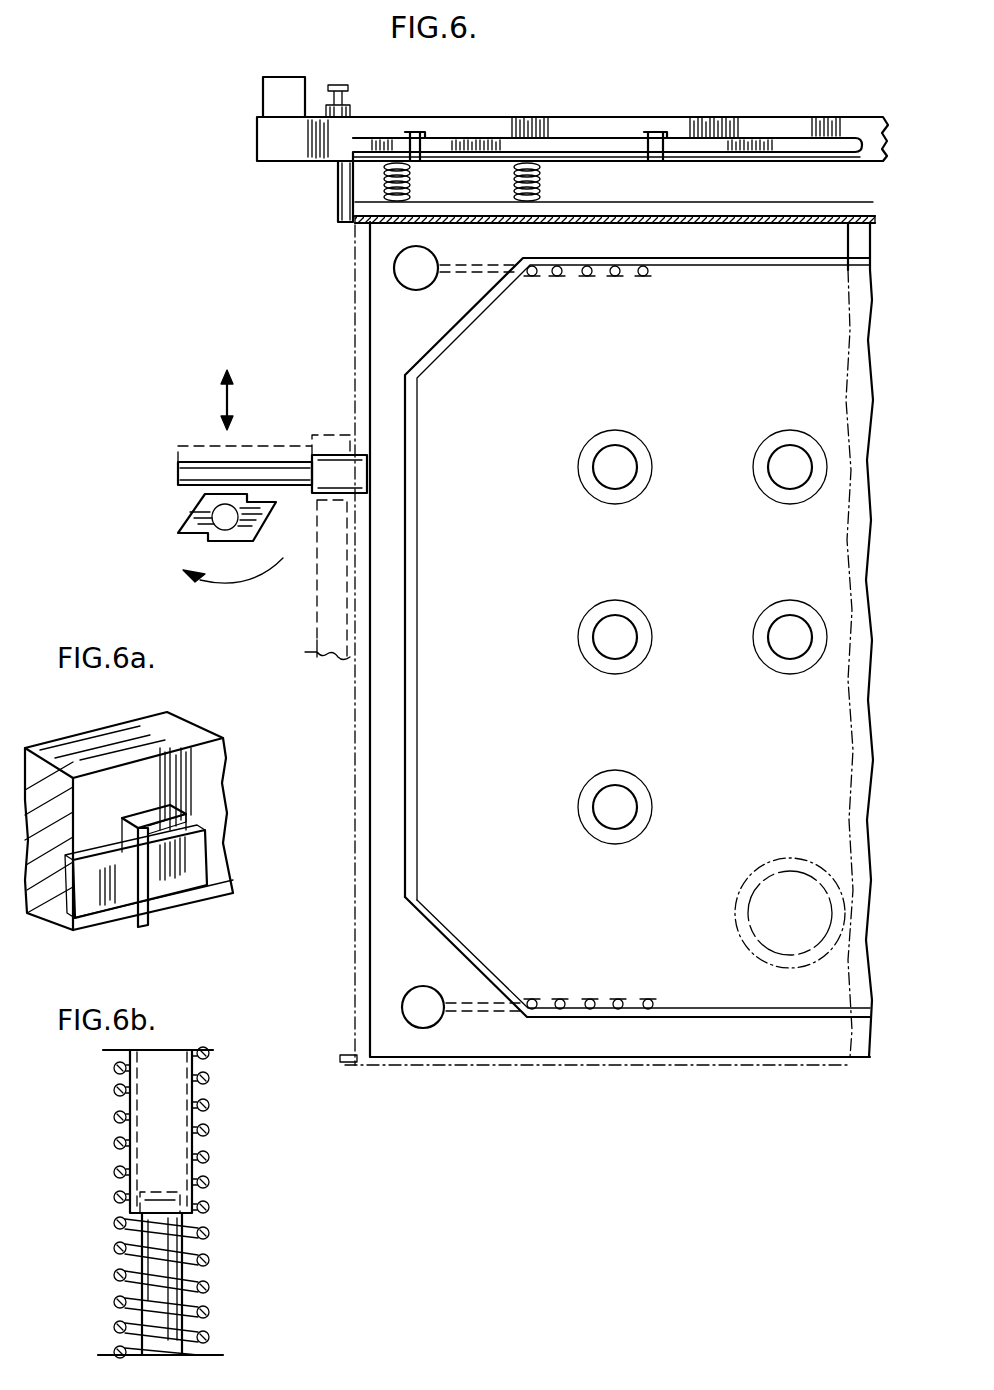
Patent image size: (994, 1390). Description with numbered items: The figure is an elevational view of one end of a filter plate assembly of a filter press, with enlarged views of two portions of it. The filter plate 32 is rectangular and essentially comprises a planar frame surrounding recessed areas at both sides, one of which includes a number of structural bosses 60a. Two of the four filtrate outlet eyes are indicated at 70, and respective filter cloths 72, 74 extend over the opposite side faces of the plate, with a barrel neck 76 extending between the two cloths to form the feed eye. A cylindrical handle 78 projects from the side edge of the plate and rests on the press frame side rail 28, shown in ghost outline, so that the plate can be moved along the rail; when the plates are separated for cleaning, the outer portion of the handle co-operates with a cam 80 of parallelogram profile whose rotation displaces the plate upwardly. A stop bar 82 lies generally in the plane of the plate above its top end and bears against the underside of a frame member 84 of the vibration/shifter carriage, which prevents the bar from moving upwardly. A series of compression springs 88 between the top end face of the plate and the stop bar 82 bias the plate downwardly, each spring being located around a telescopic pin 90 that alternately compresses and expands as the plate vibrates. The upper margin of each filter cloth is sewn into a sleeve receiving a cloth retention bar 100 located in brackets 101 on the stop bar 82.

In FIG. 6, the side rail 28 is at (315, 627).
In FIG. 6, the filter plate 32 is at (400, 1028).
In FIG. 6, the structural bosses 60a is at (776, 466).
In FIG. 6, the filtrate outlet eyes 70 is at (428, 278).
In FIG. 6, the filter cloth 72 is at (868, 1050).
In FIG. 6, the filter cloth 74 is at (762, 1066).
In FIG. 6, the barrel neck 76 is at (736, 911).
In FIG. 6, the handle 78 is at (283, 460).
In FIG. 6, the cam 80 is at (182, 512).
In FIG. 6, the stop bar 82 is at (548, 117).
In FIG. 6A, the stop bar 82 is at (218, 772).
In FIG. 6, the frame member 84 is at (285, 76).
In FIG. 6B, the compression spring 88 is at (212, 1130).
In FIG. 6B, the pin 90 is at (163, 1203).
In FIG. 6, the cloth retention bar 100 is at (765, 150).
In FIG. 6A, the cloth retention bar 100 is at (188, 878).
In FIG. 6, the brackets 101 is at (413, 132).
In FIG. 6A, the brackets 101 is at (152, 820).